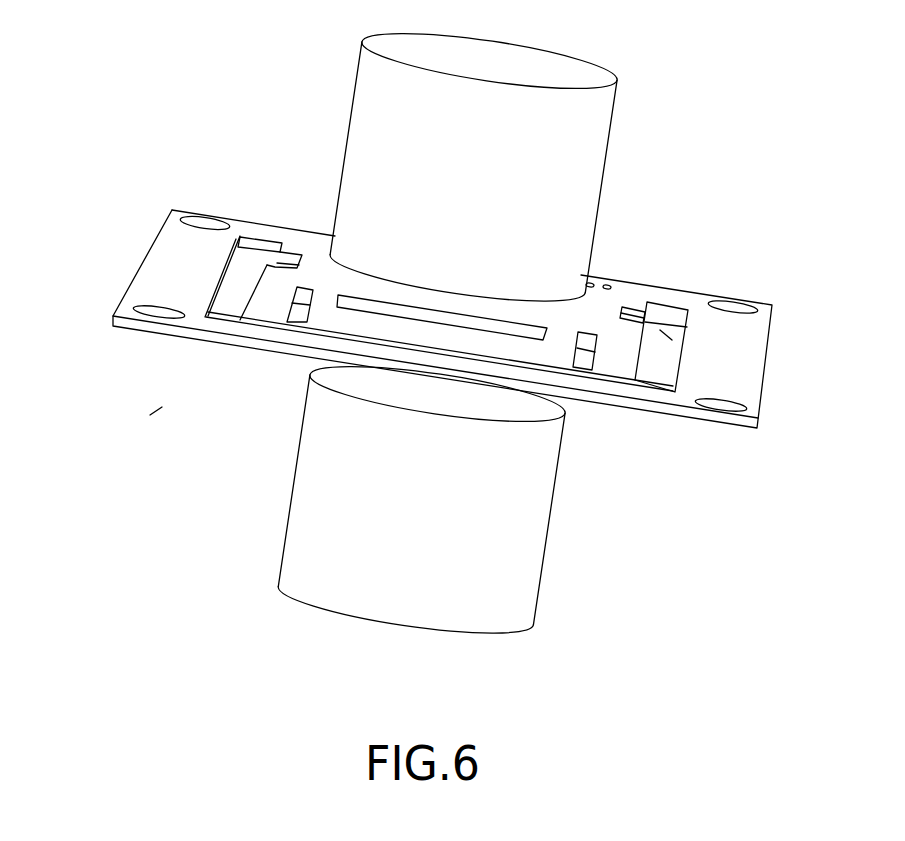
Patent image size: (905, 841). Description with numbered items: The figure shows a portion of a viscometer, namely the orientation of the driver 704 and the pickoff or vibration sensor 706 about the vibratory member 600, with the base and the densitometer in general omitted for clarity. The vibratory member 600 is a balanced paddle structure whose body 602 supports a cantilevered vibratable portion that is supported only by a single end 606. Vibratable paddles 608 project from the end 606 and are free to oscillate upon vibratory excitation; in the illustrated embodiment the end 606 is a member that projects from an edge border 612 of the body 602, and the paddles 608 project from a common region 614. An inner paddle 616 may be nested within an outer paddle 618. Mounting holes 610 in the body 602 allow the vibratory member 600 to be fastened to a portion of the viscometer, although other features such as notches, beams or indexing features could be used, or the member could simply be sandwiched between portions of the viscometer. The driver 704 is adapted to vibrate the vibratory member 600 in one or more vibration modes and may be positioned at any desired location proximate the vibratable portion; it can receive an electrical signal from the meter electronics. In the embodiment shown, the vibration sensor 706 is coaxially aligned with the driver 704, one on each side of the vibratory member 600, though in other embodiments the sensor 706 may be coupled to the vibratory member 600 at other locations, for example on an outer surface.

The vibratory member 600 is at (158, 410).
The body 602 is at (750, 392).
The end 606 is at (643, 297).
The vibratable paddles 608 is at (682, 336).
The mounting holes 610 is at (213, 218).
The edge border 612 is at (290, 226).
The common region 614 is at (633, 313).
The inner paddle 616 is at (565, 358).
The outer paddle 618 is at (613, 367).
The driver 704 is at (305, 478).
The vibration sensor 706 is at (358, 88).